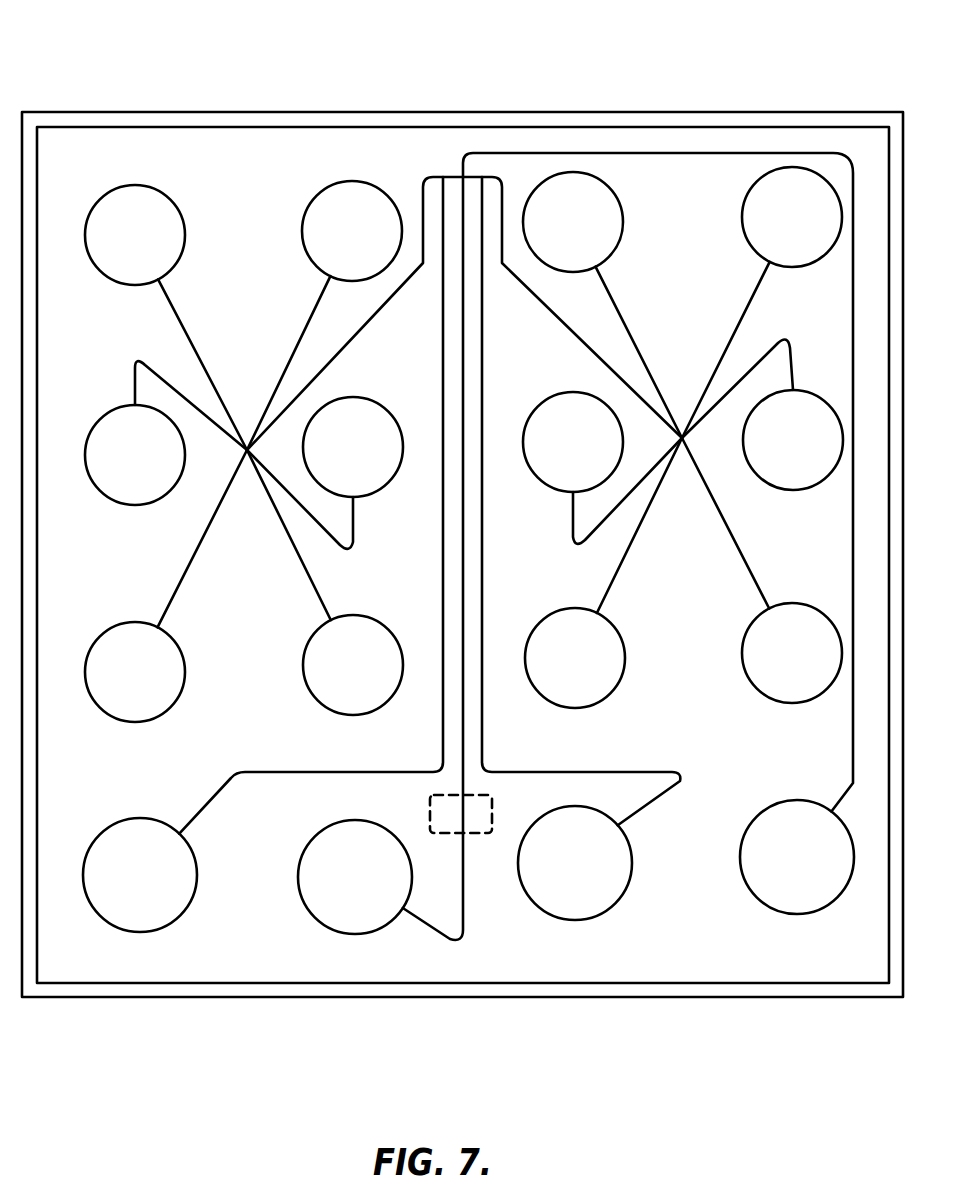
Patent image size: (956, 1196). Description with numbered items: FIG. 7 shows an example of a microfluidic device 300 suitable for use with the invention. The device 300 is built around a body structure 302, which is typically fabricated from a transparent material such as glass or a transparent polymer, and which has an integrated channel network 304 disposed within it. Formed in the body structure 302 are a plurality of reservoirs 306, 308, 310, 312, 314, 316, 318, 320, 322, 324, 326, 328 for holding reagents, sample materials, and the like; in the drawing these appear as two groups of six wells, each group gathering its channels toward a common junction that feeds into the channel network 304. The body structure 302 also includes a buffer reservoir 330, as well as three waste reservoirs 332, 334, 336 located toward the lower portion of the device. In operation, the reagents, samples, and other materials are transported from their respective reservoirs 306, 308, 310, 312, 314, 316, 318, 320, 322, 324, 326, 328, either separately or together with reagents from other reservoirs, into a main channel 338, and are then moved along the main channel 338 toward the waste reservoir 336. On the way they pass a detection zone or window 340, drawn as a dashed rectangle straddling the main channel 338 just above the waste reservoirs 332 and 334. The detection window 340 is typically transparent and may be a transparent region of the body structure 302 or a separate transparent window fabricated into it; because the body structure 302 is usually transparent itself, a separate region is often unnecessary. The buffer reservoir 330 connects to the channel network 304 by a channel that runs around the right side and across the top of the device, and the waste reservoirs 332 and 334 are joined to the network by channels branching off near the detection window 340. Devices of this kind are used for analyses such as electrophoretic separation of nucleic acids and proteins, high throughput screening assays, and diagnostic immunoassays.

The microfluidic device 300 is at (80, 62).
The body structure 302 is at (290, 117).
The integrated channel network 304 is at (413, 150).
The reservoir 306 is at (153, 250).
The reservoir 308 is at (370, 246).
The reservoir 310 is at (153, 470).
The reservoir 312 is at (371, 462).
The reservoir 314 is at (153, 687).
The reservoir 316 is at (371, 680).
The reservoir 318 is at (591, 237).
The reservoir 320 is at (810, 232).
The reservoir 322 is at (591, 457).
The reservoir 324 is at (811, 455).
The reservoir 326 is at (593, 673).
The reservoir 328 is at (810, 668).
The buffer reservoir 330 is at (815, 872).
The waste reservoir 332 is at (158, 890).
The waste reservoir 334 is at (593, 878).
The waste reservoir 336 is at (373, 892).
The main channel 338 is at (464, 912).
The detection window 340 is at (492, 803).